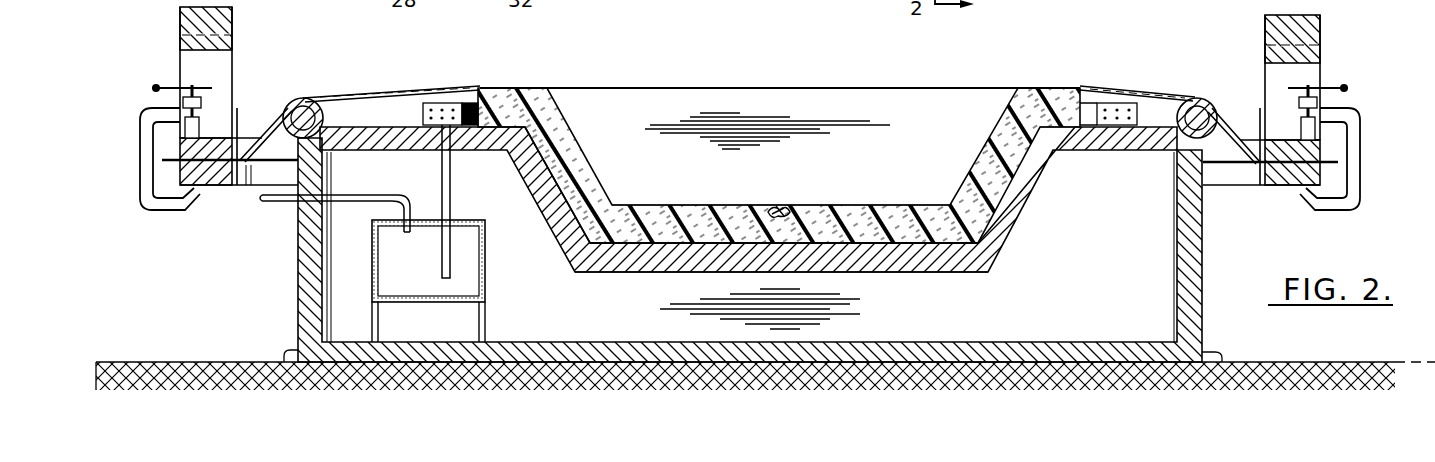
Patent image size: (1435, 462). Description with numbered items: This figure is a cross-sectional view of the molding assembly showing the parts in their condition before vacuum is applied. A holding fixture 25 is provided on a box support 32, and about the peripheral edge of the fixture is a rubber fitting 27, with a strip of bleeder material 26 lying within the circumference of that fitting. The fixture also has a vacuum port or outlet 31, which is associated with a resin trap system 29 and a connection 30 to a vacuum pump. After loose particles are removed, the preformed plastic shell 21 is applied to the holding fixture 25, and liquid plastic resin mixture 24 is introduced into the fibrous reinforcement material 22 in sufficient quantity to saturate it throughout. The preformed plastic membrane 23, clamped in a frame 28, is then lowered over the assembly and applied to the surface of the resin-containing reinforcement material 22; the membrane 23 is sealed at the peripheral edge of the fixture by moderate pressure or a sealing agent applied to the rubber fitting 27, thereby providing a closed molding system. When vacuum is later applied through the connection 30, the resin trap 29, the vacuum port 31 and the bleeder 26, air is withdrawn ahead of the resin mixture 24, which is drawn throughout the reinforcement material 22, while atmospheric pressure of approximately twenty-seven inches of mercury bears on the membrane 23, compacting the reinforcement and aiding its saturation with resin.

The preformed plastic shell 21 is at (1005, 200).
The fibrous reinforcement material 22 is at (984, 147).
The preformed plastic membrane 23 is at (662, 205).
The liquid plastic resin mixture 24 is at (781, 208).
The holding fixture 25 is at (612, 258).
The strip of bleeder material 26 is at (436, 103).
The rubber fitting 27 is at (290, 110).
The frame 28 is at (180, 172).
The resin trap system 29 is at (425, 268).
The connection to vacuum pump 30 is at (274, 202).
The vacuum port or outlet 31 is at (452, 261).
The box support 32 is at (1053, 342).